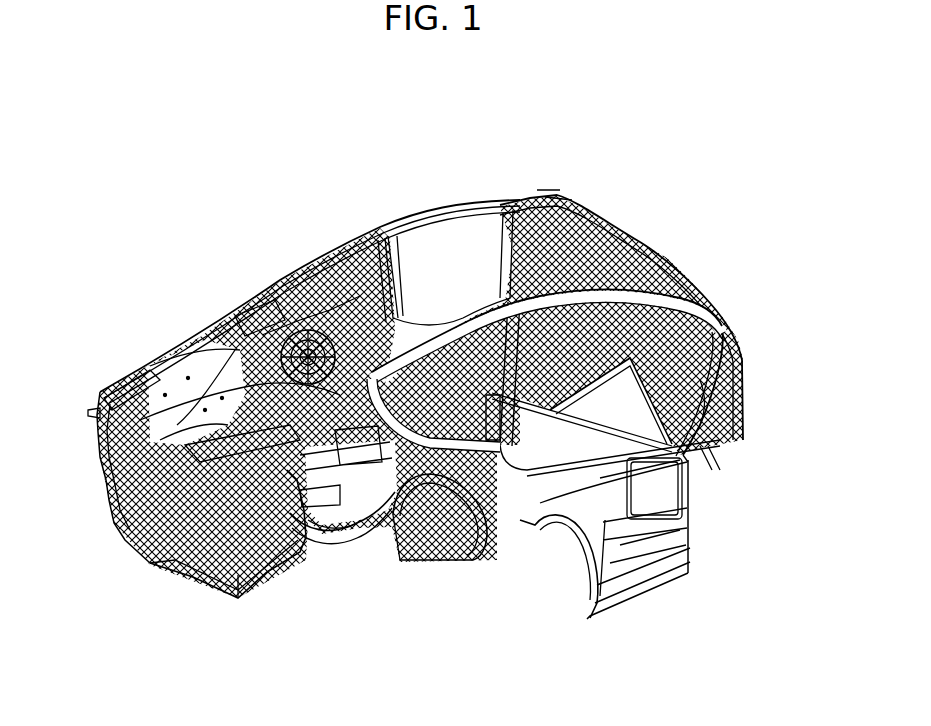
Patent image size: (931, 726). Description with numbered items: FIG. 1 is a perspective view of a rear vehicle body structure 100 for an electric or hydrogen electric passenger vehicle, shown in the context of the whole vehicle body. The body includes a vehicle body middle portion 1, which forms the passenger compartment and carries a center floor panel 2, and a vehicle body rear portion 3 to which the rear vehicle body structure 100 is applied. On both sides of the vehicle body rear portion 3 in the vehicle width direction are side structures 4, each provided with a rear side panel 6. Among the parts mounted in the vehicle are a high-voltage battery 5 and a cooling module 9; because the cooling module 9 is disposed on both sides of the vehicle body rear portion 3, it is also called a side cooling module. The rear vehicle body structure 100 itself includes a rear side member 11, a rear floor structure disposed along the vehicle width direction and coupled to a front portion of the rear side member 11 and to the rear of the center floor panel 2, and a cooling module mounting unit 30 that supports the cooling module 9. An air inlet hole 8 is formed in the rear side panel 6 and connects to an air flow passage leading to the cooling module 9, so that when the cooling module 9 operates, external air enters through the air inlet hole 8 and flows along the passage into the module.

The rear vehicle body structure 100 is at (449, 104).
The vehicle body middle portion 1 is at (704, 464).
The center floor panel 2 is at (693, 413).
The vehicle body rear portion 3 is at (357, 548).
The side structure 4 is at (258, 272).
The battery 5 is at (440, 524).
The rear side panel 6 is at (601, 414).
The air inlet hole 8 is at (660, 488).
The cooling module 9 is at (257, 329).
The rear side member 11 is at (141, 366).
The cooling module mounting unit 30 is at (409, 327).